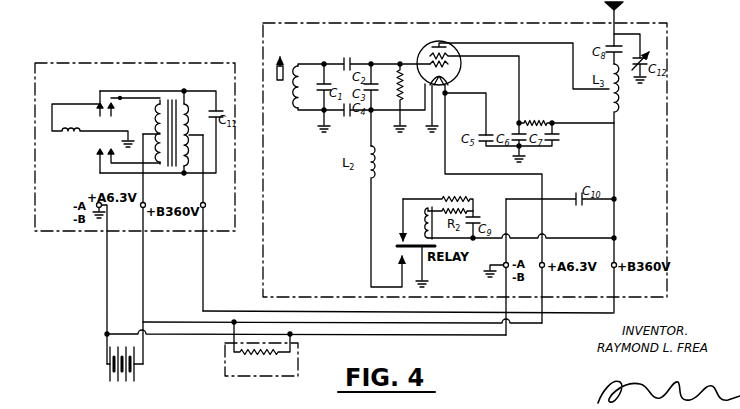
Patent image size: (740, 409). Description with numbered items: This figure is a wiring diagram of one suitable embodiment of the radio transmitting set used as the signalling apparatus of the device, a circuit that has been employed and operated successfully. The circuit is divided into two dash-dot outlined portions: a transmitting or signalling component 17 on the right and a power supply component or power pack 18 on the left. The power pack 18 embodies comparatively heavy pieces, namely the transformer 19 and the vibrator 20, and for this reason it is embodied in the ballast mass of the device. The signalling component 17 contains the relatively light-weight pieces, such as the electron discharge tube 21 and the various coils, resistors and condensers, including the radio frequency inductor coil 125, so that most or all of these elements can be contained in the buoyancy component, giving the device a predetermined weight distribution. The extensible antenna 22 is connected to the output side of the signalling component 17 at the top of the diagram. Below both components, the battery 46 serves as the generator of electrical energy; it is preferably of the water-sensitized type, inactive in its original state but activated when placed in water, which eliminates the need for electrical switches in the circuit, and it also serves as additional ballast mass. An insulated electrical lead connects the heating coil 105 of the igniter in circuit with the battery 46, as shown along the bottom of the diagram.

The transmitting or signalling component 17 is at (671, 169).
The power supply component or power pack 18 is at (44, 236).
The transformer 19 is at (173, 87).
The vibrator 20 is at (60, 153).
The electron discharge tube 21 is at (461, 39).
The antenna 22 is at (627, 9).
The battery 46 is at (112, 378).
The heating coil 105 is at (255, 353).
The radio frequency inductor coil 125 is at (286, 97).